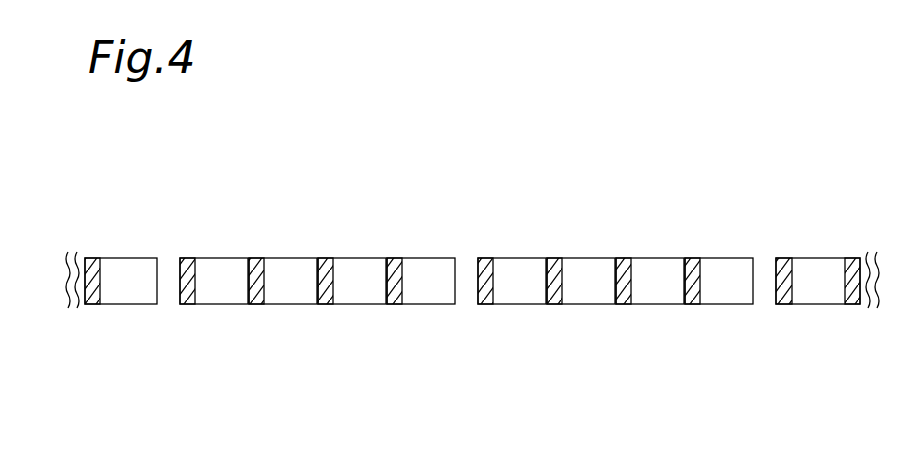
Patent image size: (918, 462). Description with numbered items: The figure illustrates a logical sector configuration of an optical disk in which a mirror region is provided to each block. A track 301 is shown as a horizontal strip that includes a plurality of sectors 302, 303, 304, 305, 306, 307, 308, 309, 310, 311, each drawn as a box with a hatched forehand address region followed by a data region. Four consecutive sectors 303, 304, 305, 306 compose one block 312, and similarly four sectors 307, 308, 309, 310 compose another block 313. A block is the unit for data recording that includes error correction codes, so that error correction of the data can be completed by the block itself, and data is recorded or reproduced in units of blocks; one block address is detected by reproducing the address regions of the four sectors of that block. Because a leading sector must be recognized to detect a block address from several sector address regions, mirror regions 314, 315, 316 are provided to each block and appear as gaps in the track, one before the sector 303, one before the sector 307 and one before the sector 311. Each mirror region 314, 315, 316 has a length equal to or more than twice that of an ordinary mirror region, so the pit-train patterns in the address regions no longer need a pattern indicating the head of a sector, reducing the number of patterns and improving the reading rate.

The track 301 is at (60, 283).
The sector 302 is at (157, 252).
The sector 303 is at (214, 258).
The sector 304 is at (283, 258).
The sector 305 is at (352, 258).
The sector 306 is at (421, 258).
The sector 307 is at (512, 258).
The sector 308 is at (581, 258).
The sector 309 is at (650, 258).
The sector 310 is at (719, 258).
The sector 311 is at (860, 252).
The block 312 is at (317, 283).
The block 313 is at (615, 283).
The mirror region 314 is at (167, 318).
The mirror region 315 is at (467, 320).
The mirror region 316 is at (764, 320).